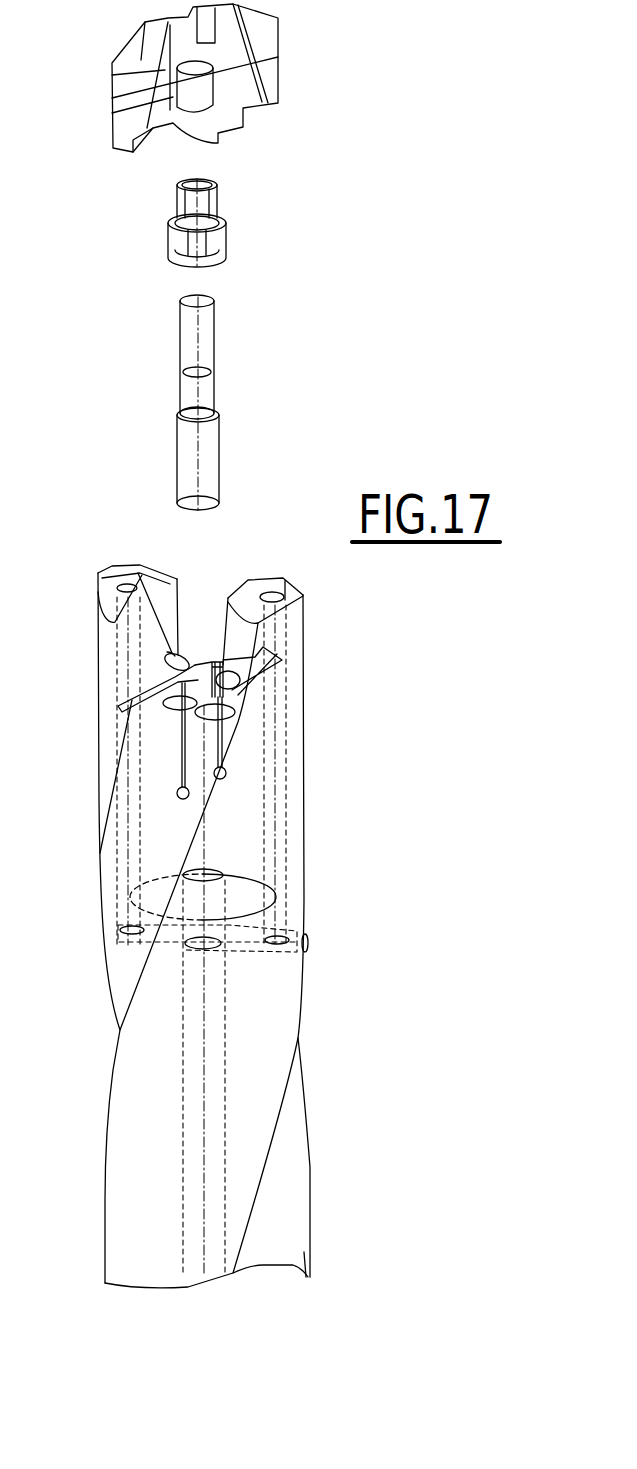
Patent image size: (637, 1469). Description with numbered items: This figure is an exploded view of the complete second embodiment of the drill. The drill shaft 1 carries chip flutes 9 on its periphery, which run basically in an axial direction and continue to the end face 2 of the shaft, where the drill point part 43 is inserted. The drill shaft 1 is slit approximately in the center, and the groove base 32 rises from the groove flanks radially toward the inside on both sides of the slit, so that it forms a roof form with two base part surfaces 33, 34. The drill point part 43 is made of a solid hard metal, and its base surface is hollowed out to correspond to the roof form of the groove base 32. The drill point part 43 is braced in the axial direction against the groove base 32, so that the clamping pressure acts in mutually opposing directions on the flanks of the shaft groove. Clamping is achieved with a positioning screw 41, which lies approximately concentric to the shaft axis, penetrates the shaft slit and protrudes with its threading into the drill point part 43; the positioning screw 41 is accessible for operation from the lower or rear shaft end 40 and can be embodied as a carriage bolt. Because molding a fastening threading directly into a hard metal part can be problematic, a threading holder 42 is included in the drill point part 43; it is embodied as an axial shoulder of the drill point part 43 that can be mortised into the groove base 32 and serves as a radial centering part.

The drill shaft 1 is at (312, 919).
The end face 2 is at (212, 580).
The chip flutes 9 is at (163, 812).
The groove base 32 is at (204, 642).
The base part surface 33 is at (277, 654).
The base part surface 34 is at (167, 652).
The rear shaft end 40 is at (262, 1268).
The positioning screw 41 is at (232, 385).
The threading holder 42 is at (227, 213).
The drill point part 43 is at (290, 70).